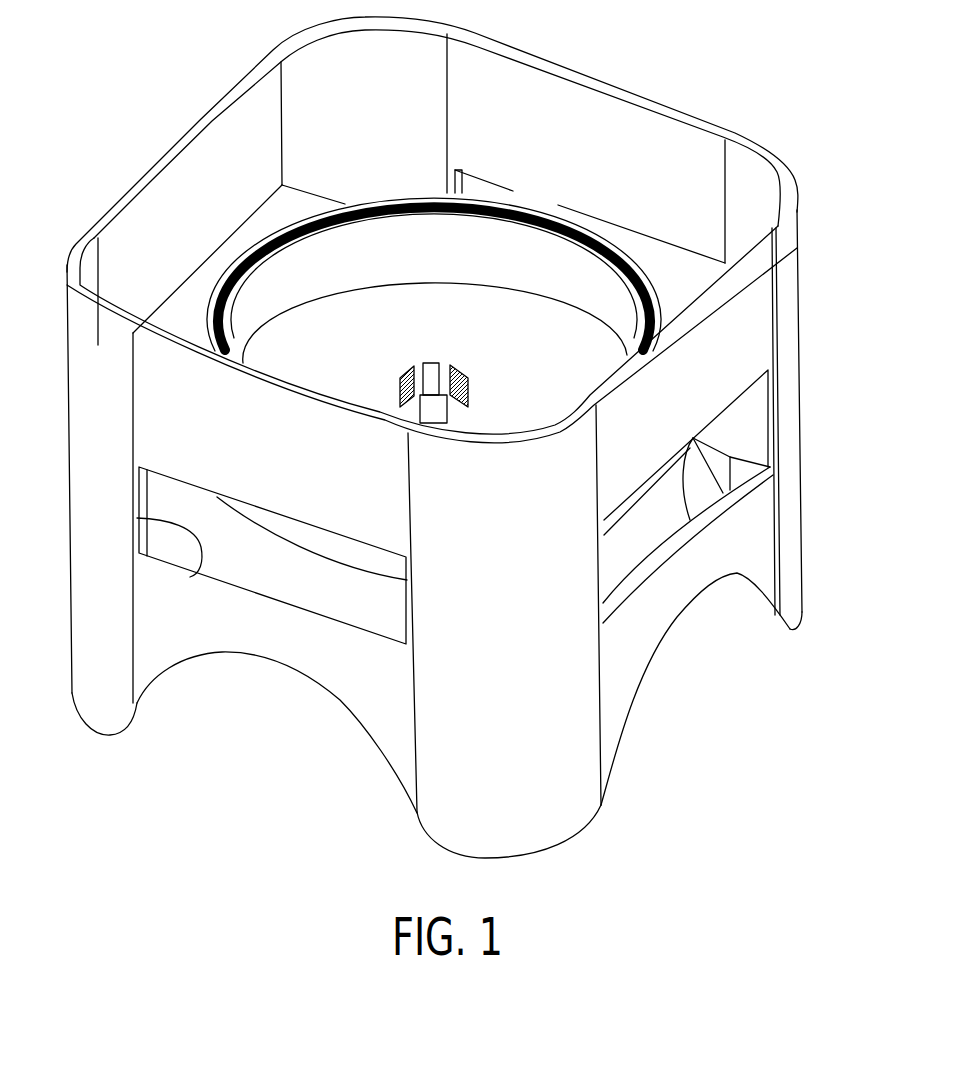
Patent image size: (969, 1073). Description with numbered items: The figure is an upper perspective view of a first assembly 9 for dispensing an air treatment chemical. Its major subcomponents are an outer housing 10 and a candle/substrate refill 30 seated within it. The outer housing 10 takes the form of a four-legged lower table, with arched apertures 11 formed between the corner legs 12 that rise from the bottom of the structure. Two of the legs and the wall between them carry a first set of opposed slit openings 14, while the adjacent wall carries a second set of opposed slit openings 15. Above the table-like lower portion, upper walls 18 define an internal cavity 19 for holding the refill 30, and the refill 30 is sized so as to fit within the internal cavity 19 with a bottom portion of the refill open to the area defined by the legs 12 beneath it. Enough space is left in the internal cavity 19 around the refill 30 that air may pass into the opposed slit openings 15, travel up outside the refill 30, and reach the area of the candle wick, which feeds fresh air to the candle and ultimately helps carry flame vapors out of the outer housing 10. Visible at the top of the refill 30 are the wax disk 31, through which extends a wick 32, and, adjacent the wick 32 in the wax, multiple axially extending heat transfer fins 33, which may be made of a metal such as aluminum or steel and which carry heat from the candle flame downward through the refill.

The first assembly 9 is at (819, 368).
The outer housing 10 is at (783, 277).
The arched apertures 11 is at (277, 703).
The corner legs 12 is at (97, 702).
The first set of opposed slit openings 14 is at (137, 518).
The second set of opposed slit openings 15 is at (696, 440).
The upper walls 18 is at (695, 397).
The internal cavity 19 is at (206, 174).
The candle/substrate refill 30 is at (507, 200).
The wax disk 31 is at (559, 374).
The wick 32 is at (437, 363).
The heat transfer fins 33 is at (418, 363).